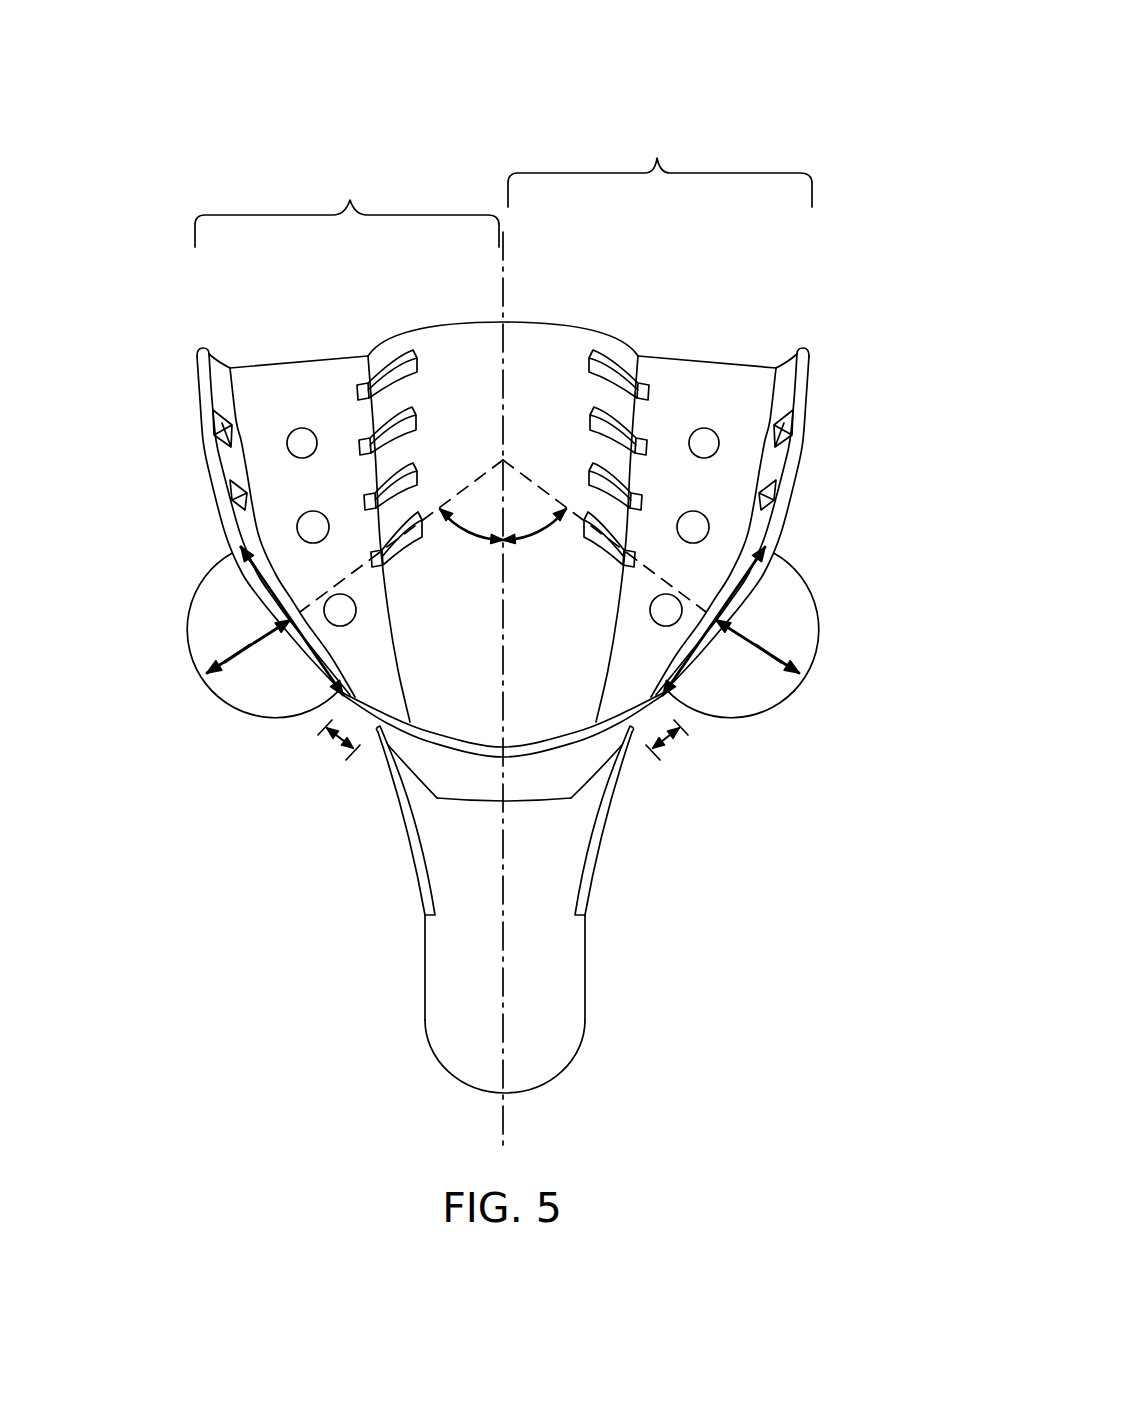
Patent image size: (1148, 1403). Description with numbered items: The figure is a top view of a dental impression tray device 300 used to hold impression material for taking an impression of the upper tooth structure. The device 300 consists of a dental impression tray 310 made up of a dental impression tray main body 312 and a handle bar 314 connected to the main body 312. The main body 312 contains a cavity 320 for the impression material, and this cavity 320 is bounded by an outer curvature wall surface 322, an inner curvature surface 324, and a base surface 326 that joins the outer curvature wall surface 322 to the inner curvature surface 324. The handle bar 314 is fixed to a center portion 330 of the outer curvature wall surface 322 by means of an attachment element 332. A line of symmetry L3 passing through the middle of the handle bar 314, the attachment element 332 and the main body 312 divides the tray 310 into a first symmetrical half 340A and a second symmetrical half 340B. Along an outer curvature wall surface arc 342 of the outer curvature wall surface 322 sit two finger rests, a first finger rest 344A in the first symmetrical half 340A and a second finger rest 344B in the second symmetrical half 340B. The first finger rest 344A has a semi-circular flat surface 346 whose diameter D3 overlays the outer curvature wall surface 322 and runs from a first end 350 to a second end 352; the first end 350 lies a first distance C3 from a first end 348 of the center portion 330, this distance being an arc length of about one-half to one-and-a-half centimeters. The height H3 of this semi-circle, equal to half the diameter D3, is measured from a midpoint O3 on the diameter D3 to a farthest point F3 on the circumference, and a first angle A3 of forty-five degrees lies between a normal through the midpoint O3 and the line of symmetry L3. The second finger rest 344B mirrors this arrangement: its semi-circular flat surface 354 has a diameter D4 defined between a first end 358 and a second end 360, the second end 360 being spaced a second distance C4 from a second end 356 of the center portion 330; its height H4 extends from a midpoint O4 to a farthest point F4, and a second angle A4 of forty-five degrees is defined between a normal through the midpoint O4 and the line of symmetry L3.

The dental impression tray device 300 is at (793, 83).
The dental impression tray 310 is at (791, 800).
The dental impression tray main body 312 is at (190, 456).
The handle bar 314 is at (618, 977).
The cavity 320 is at (290, 390).
The outer curvature wall surface 322 is at (200, 352).
The inner curvature surface 324 is at (380, 350).
The base surface 326 is at (330, 358).
The center portion 330 is at (558, 783).
The attachment element 332 is at (414, 873).
The first symmetrical half 340A is at (350, 200).
The second symmetrical half 340B is at (657, 158).
The outer curvature wall surface arc 342 is at (238, 548).
The first finger rest 344A is at (243, 688).
The second finger rest 344B is at (763, 688).
The flat surface 346 is at (257, 685).
The first end 348 is at (378, 732).
The first end 350 is at (343, 698).
The second end 352 is at (233, 542).
The flat surface 354 is at (749, 685).
The second end 356 is at (632, 732).
The first end 358 is at (773, 542).
The second end 360 is at (663, 698).
The first angle A3 is at (467, 534).
The second angle A4 is at (539, 534).
The first distance C3 is at (343, 748).
The second distance C4 is at (663, 748).
The diameter D3 is at (268, 556).
The diameter D4 is at (738, 556).
The farthest point F3 is at (210, 670).
The farthest point F4 is at (796, 670).
The height H3 is at (205, 640).
The height H4 is at (801, 640).
The midpoint O3 is at (248, 605).
The midpoint O4 is at (758, 605).
The line of symmetry L3 is at (503, 292).